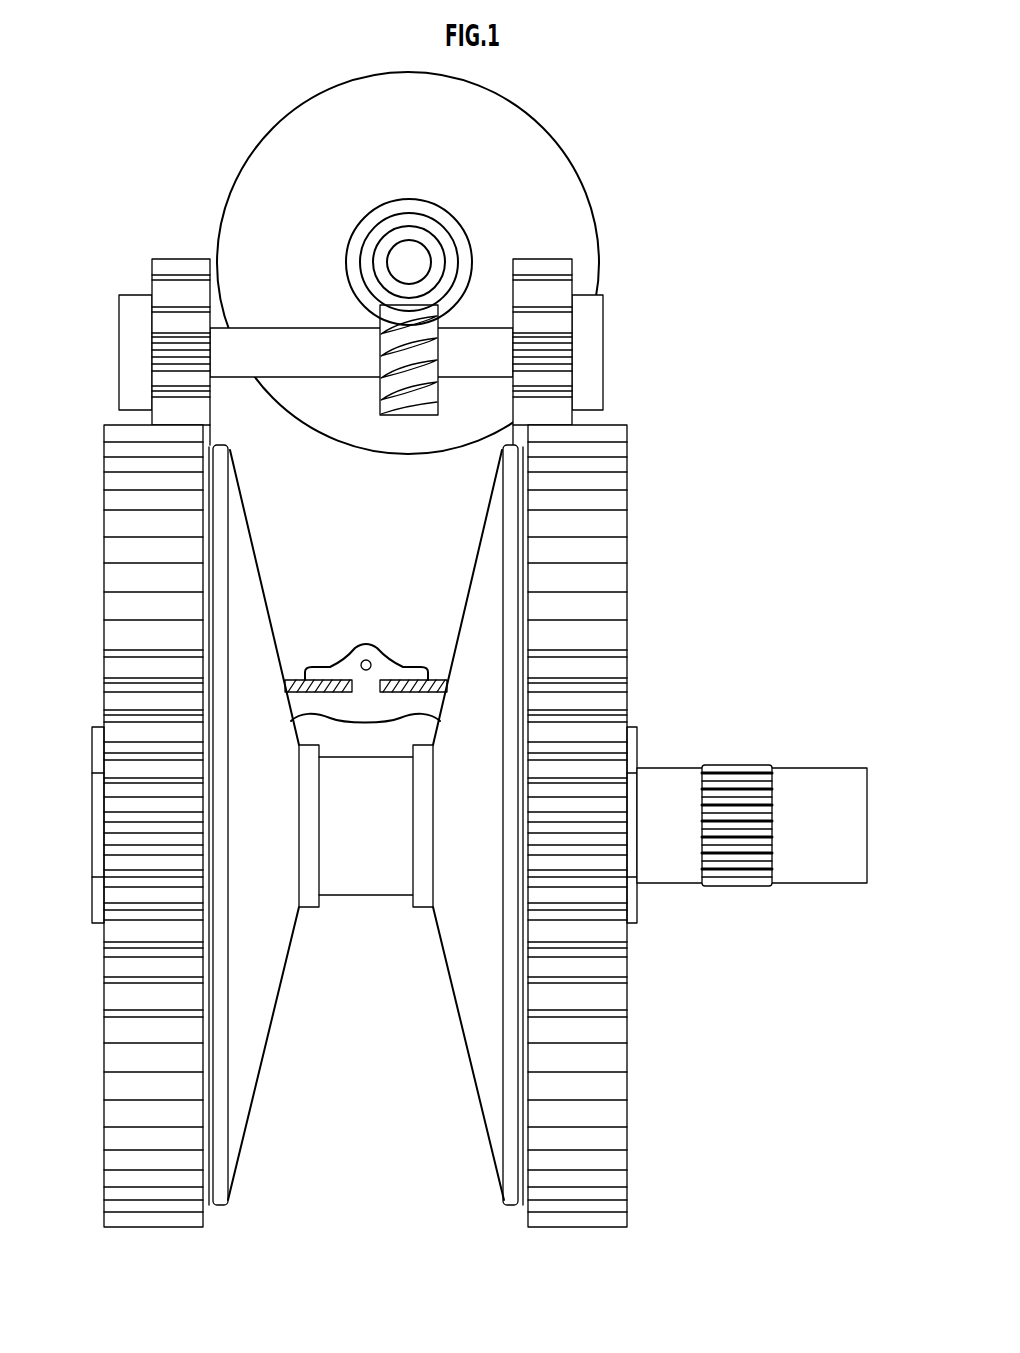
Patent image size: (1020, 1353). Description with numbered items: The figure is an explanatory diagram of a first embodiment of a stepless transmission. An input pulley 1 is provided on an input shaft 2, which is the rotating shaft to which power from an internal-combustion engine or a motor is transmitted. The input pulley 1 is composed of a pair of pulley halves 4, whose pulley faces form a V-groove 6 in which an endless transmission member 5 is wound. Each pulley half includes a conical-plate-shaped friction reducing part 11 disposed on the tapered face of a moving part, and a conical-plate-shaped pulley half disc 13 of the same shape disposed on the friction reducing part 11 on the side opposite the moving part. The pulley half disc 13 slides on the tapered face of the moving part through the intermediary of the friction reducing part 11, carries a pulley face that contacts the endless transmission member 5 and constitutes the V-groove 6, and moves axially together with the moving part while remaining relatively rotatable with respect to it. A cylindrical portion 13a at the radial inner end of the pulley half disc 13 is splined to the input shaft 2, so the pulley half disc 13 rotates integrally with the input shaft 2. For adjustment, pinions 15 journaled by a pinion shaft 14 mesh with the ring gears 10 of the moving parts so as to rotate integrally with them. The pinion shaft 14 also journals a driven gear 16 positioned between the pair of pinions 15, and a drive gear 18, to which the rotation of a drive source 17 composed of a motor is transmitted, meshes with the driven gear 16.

The input pulley 1 is at (668, 223).
The input shaft 2 is at (810, 765).
The pulley halves 4 is at (246, 1206).
The endless transmission member 5 is at (358, 642).
The V-groove 6 is at (357, 527).
The ring gears 10 is at (120, 441).
The friction reducing part 11 is at (208, 1123).
The pulley half disc 13 is at (284, 978).
The cylindrical portion 13a is at (422, 909).
The pinion shaft 14 is at (278, 327).
The pinions 15 is at (173, 258).
The driven gear 16 is at (373, 316).
The drive source 17 is at (264, 134).
The drive gear 18 is at (398, 206).